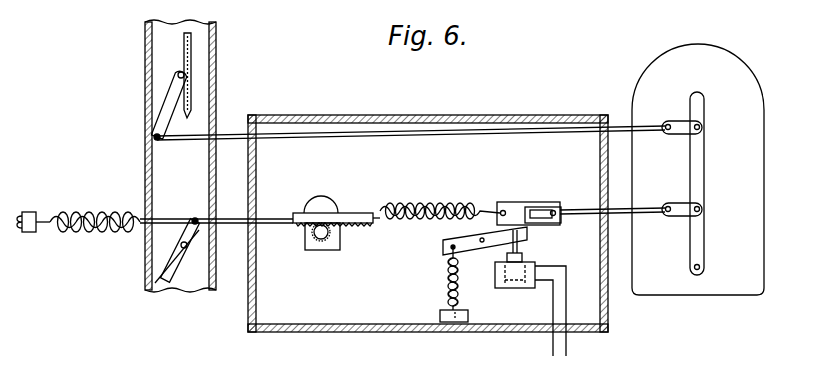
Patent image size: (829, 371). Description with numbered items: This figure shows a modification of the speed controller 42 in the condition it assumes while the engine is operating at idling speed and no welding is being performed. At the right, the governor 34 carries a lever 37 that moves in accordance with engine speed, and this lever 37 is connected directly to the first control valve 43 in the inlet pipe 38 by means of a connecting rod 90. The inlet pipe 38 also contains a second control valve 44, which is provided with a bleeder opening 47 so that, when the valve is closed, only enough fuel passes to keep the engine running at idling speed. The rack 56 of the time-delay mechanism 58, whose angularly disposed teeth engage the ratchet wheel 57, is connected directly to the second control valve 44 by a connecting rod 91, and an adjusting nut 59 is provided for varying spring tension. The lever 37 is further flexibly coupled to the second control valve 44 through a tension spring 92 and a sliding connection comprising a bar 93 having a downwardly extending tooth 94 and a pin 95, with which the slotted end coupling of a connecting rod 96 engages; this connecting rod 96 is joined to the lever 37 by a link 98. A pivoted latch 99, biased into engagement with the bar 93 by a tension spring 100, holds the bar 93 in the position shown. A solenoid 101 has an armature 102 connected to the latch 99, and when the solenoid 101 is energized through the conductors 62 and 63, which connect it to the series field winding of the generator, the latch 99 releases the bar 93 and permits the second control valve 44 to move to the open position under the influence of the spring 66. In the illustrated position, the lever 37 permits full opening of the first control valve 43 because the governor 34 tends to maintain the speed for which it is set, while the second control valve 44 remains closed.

The governor 34 is at (760, 96).
The lever 37 is at (700, 94).
The inlet pipe 38 is at (216, 66).
The speed controller 42 is at (398, 114).
The first control valve 43 is at (200, 62).
The second control valve 44 is at (186, 250).
The bleeder opening 47 is at (172, 262).
The rack 56 is at (348, 211).
The ratchet wheel 57 is at (331, 236).
The time-delay mechanism 58 is at (318, 197).
The adjusting nut 59 is at (18, 212).
The conductor 62 is at (552, 347).
The conductor 63 is at (567, 347).
The spring 66 is at (117, 212).
The connecting rod 90 is at (468, 128).
The connecting rod 91 is at (276, 214).
The tension spring 92 is at (414, 202).
The bar 93 is at (506, 202).
The tooth 94 is at (524, 230).
The pin 95 is at (541, 207).
The connecting rod 96 is at (578, 208).
The link 98 is at (678, 218).
The latch 99 is at (485, 248).
The tension spring 100 is at (460, 292).
The solenoid 101 is at (545, 266).
The armature 102 is at (522, 262).